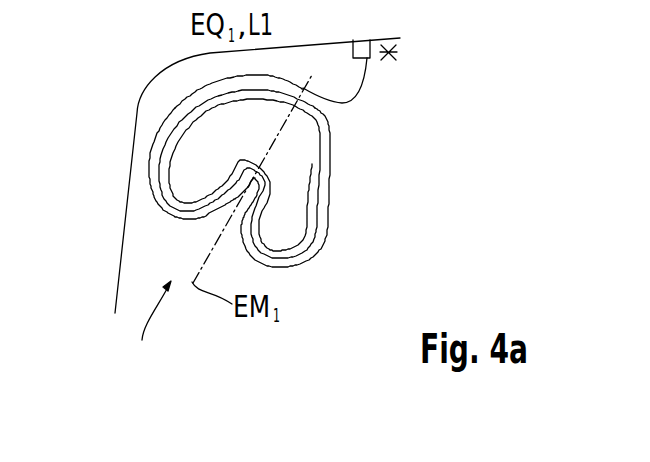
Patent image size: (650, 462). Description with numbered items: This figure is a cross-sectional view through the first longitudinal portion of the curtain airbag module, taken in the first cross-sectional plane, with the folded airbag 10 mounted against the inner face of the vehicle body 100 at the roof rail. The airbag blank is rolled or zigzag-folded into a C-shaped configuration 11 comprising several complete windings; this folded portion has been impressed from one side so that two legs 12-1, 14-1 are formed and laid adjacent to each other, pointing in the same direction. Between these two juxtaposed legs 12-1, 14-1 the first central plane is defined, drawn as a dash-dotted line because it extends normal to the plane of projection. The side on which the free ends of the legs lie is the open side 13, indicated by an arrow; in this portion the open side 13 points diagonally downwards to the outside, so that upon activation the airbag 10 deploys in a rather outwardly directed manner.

The vehicle body 100 is at (136, 112).
The airbag 10 is at (259, 146).
The C-shaped configuration 11 is at (333, 172).
The leg 12-1 is at (152, 194).
The open side 13 is at (150, 326).
The leg 14-1 is at (314, 252).